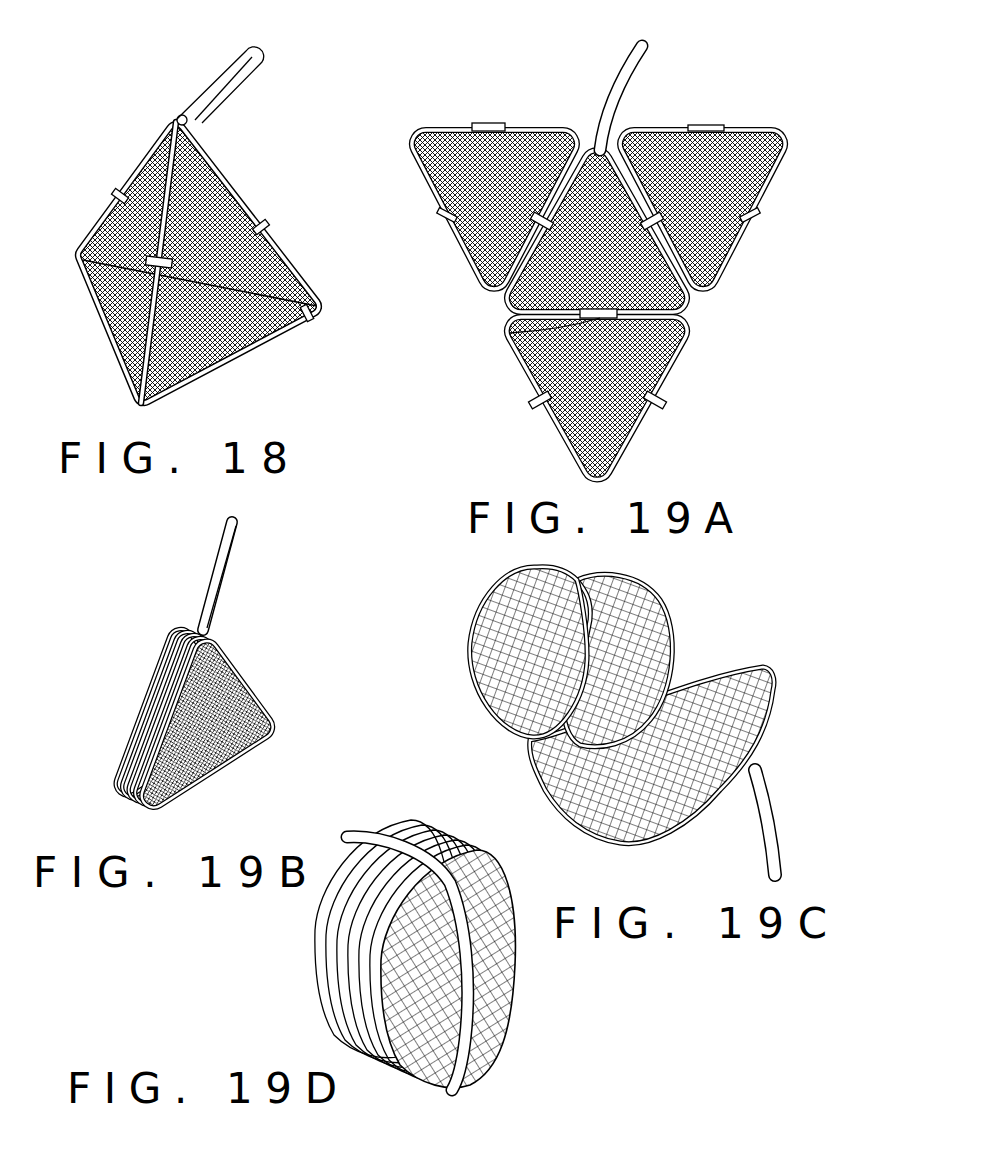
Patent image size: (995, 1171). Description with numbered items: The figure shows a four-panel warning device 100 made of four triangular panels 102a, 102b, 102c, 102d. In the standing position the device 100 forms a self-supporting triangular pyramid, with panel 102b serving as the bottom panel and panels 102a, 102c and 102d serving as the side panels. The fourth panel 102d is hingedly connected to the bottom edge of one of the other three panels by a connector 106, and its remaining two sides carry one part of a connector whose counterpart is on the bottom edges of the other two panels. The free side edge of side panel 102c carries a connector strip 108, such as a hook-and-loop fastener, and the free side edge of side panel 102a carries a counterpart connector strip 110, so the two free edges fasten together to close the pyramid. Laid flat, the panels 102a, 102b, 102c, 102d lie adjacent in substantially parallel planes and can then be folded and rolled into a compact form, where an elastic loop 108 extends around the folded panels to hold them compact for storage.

In FIG. 18, the four-panel warning device 100 is at (140, 125).
In FIG. 19A, the four-panel warning device 100 is at (662, 88).
In FIG. 19D, the four-panel warning device 100 is at (374, 812).
In FIG. 18, the side panel 102a is at (178, 114).
In FIG. 19A, the side panel 102a is at (727, 126).
In FIG. 19B, the side panel 102a is at (241, 777).
In FIG. 18, the bottom panel 102b is at (330, 320).
In FIG. 19A, the bottom panel 102b is at (690, 307).
In FIG. 19B, the bottom panel 102b is at (103, 810).
In FIG. 18, the side panel 102c is at (86, 292).
In FIG. 19A, the side panel 102c is at (437, 127).
In FIG. 19B, the side panel 102c is at (137, 830).
In FIG. 18, the fourth panel 102d is at (229, 381).
In FIG. 19A, the fourth panel 102d is at (644, 431).
In FIG. 19B, the fourth panel 102d is at (177, 622).
In FIG. 19A, the connector 106 is at (584, 150).
In FIG. 18, the connector strip 108 is at (235, 87).
In FIG. 19A, the connector strip 108 is at (630, 63).
In FIG. 19B, the connector strip 108 is at (238, 533).
In FIG. 19D, the connector strip 108 is at (473, 1017).
In FIG. 19A, the counterpart connector strip 110 is at (710, 126).